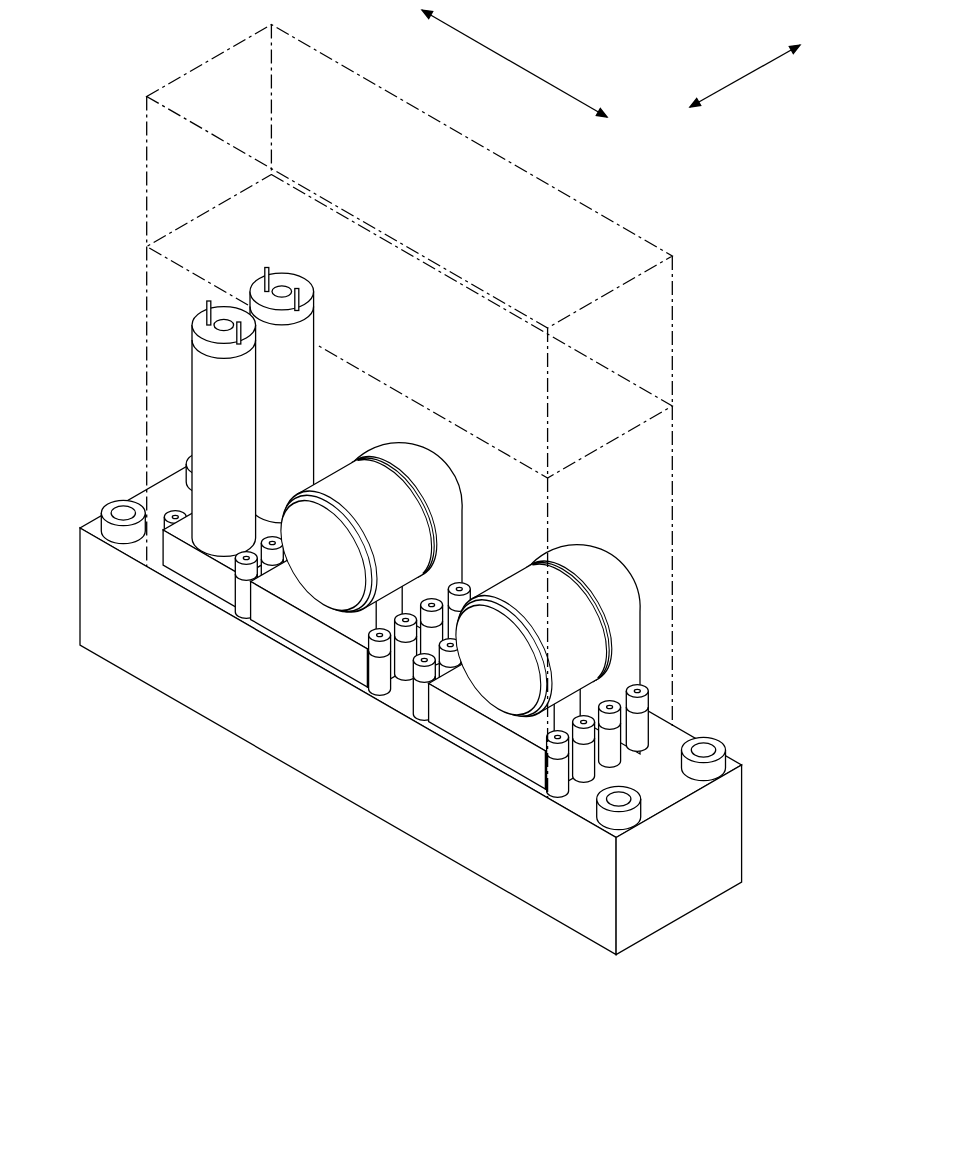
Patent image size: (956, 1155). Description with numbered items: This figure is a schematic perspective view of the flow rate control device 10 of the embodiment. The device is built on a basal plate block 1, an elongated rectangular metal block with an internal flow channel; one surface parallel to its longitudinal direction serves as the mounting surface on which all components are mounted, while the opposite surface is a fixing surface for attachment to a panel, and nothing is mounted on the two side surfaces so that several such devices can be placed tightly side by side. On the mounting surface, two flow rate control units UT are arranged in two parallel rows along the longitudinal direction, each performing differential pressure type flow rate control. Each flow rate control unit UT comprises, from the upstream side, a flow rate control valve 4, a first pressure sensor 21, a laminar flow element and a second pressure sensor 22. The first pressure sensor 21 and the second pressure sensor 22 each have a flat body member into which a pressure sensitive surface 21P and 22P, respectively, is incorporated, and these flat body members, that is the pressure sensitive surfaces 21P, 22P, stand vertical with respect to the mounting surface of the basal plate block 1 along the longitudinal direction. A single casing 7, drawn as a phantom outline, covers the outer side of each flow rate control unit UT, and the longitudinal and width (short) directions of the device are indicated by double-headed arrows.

The basal plate block 1 is at (158, 765).
The flow rate control valve 4 is at (320, 322).
The casing 7 is at (673, 474).
The flow rate control device 10 is at (460, 579).
The first pressure sensor 21 is at (345, 544).
The pressure sensitive surface 21P is at (388, 477).
The second pressure sensor 22 is at (553, 649).
The pressure sensitive surface 22P is at (502, 624).
The flow rate control unit UT is at (507, 634).